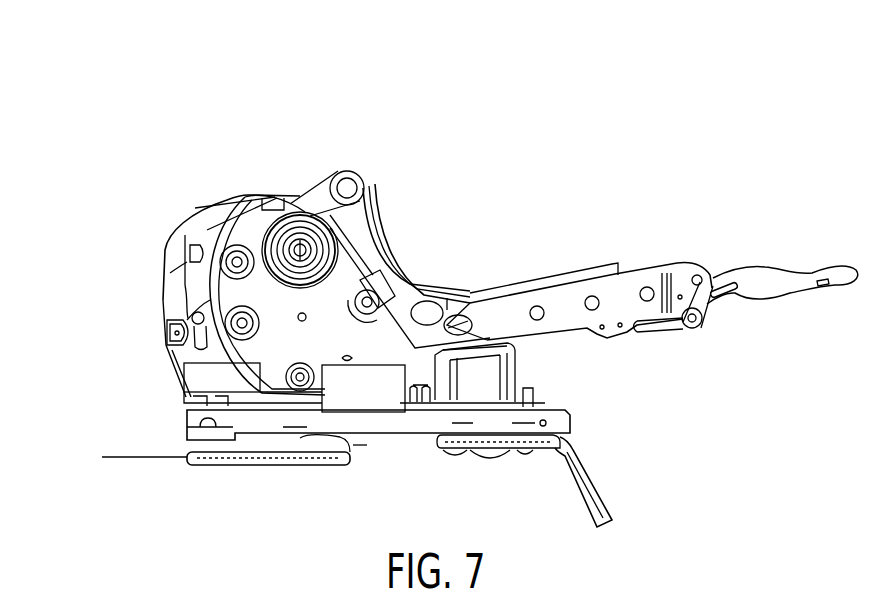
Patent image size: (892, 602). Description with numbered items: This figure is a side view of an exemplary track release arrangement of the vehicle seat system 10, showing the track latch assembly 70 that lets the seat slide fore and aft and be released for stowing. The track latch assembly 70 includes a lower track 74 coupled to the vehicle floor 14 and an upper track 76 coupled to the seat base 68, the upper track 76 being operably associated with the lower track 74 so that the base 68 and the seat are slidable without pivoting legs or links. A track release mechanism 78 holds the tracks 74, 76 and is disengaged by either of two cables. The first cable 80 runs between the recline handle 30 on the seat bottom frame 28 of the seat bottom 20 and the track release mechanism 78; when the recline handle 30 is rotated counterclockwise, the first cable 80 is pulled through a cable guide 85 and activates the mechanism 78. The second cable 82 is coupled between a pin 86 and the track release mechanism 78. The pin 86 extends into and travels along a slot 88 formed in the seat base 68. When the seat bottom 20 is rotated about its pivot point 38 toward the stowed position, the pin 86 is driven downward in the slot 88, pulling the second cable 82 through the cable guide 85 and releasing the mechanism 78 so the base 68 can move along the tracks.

The seat assembly 10 is at (124, 74).
The vehicle floor 14 is at (170, 462).
The seat bottom 20 is at (651, 172).
The seat bottom frame 28 is at (568, 272).
The recline handle 30 is at (812, 272).
The pivot point 38 is at (383, 205).
The seat base 68 is at (175, 277).
The track latch assembly 70 is at (106, 326).
The lower track 74 is at (400, 440).
The upper track 76 is at (568, 410).
The track release mechanism 78 is at (355, 400).
The first cable 80 is at (655, 328).
The second cable 82 is at (228, 203).
The cable guide 85 is at (268, 200).
The pin 86 is at (172, 313).
The slot 88 is at (175, 360).